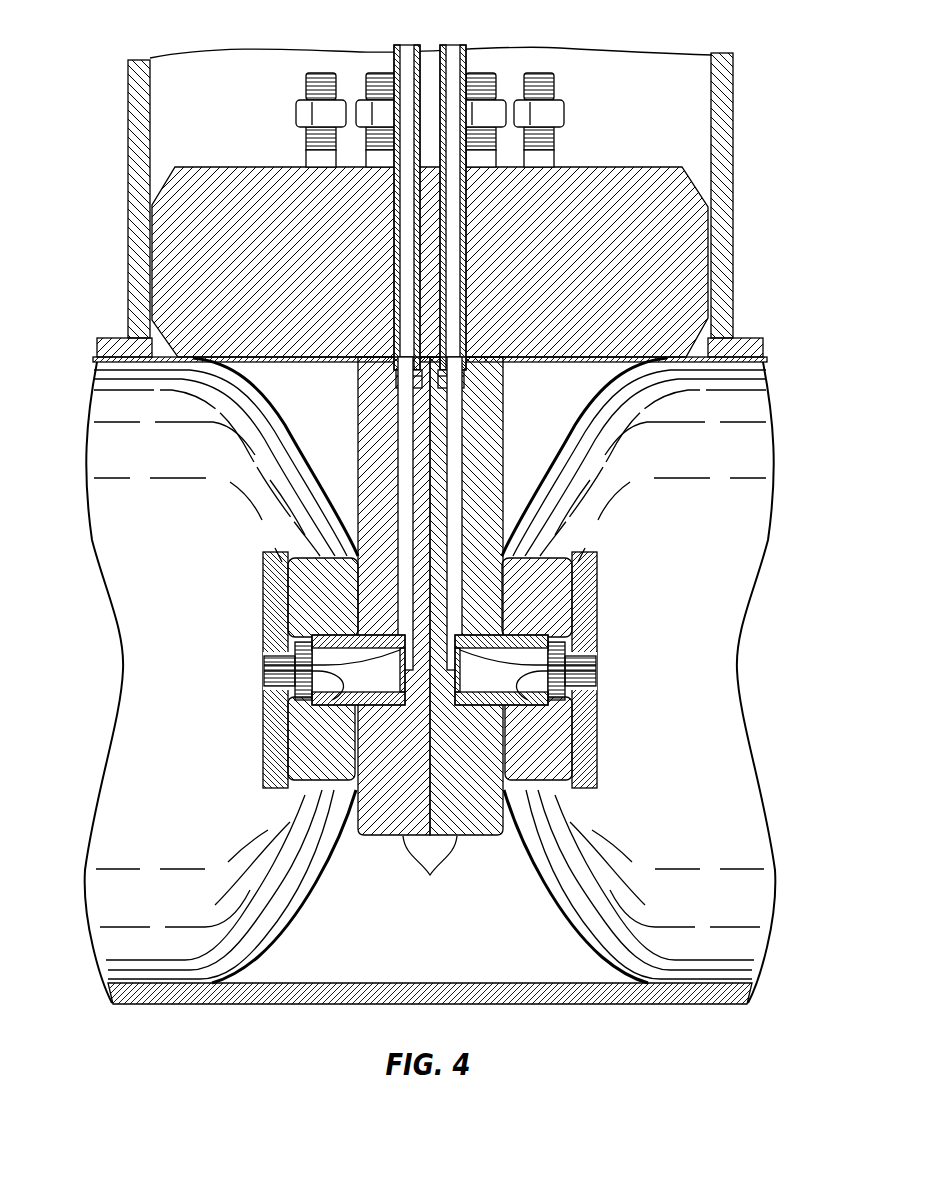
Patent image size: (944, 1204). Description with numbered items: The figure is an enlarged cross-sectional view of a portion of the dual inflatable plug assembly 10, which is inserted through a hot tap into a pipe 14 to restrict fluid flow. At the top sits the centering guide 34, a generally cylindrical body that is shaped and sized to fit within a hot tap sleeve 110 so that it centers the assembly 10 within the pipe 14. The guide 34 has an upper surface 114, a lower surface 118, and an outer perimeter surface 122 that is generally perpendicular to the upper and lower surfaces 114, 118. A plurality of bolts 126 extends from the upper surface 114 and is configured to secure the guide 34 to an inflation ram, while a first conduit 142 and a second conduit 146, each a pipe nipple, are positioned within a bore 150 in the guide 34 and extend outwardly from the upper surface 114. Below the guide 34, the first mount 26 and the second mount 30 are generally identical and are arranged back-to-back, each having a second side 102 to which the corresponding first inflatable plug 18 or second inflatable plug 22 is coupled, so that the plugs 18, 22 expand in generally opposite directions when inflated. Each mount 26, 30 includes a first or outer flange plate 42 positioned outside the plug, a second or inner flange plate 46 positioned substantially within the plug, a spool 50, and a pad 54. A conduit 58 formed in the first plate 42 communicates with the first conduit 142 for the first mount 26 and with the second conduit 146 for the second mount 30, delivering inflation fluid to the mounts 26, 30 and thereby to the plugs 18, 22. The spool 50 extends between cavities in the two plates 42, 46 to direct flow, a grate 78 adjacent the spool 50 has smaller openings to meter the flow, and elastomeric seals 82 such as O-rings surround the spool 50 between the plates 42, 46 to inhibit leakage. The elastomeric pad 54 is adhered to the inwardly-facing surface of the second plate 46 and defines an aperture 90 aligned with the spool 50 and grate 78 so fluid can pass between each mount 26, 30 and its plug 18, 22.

The dual inflatable plug assembly 10 is at (802, 150).
The pipe 14 is at (628, 1003).
The first inflatable plug 18 is at (125, 800).
The second inflatable plug 22 is at (742, 800).
The first mount 26 is at (372, 836).
The second mount 30 is at (485, 836).
The centering guide 34 is at (185, 258).
The first or outer flange plate 42 is at (430, 872).
The second or inner flange plate 46 is at (300, 782).
The spool 50 is at (355, 632).
The pad 54 is at (266, 742).
The conduit 58 is at (400, 458).
The grate 78 is at (290, 622).
The elastomeric seals 82 is at (290, 666).
The aperture 90 is at (282, 688).
The second side 102 is at (196, 583).
The hot tap sleeve 110 is at (733, 222).
The upper surface 114 is at (616, 167).
The lower surface 118 is at (505, 363).
The outer perimeter surface 122 is at (710, 278).
The bolts 126 is at (321, 72).
The first conduit 142 is at (397, 50).
The second conduit 146 is at (464, 50).
The bore 150 is at (432, 270).